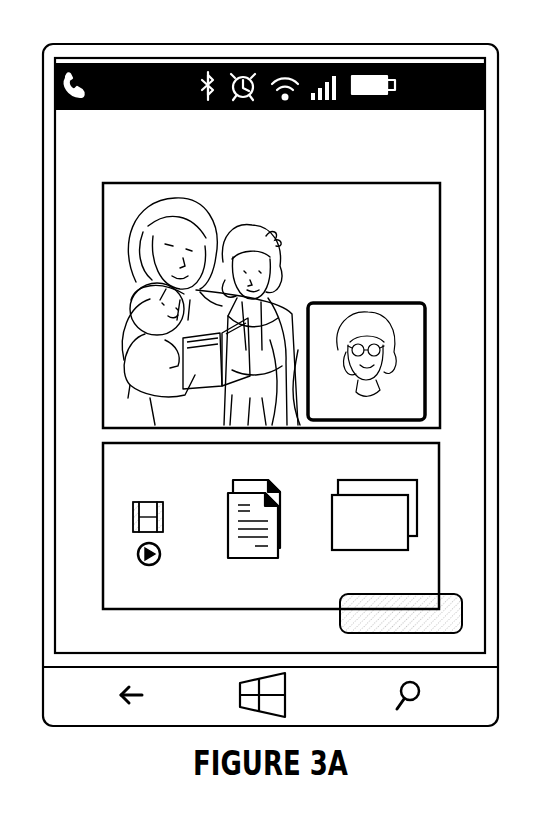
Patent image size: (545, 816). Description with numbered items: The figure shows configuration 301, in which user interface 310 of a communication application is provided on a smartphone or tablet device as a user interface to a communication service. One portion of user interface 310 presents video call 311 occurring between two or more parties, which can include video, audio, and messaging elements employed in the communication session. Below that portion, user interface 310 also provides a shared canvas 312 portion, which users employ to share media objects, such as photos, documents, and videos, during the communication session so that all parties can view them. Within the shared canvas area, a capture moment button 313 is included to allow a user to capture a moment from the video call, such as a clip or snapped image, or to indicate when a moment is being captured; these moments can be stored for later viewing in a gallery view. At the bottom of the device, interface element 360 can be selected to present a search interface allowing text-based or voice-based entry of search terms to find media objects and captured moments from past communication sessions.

The configuration 301 is at (511, 91).
The user interface 310 is at (270, 355).
The video call 311 is at (271, 291).
The shared canvas 312 is at (271, 538).
The capture moment button 313 is at (401, 613).
The interface element 360 is at (420, 700).